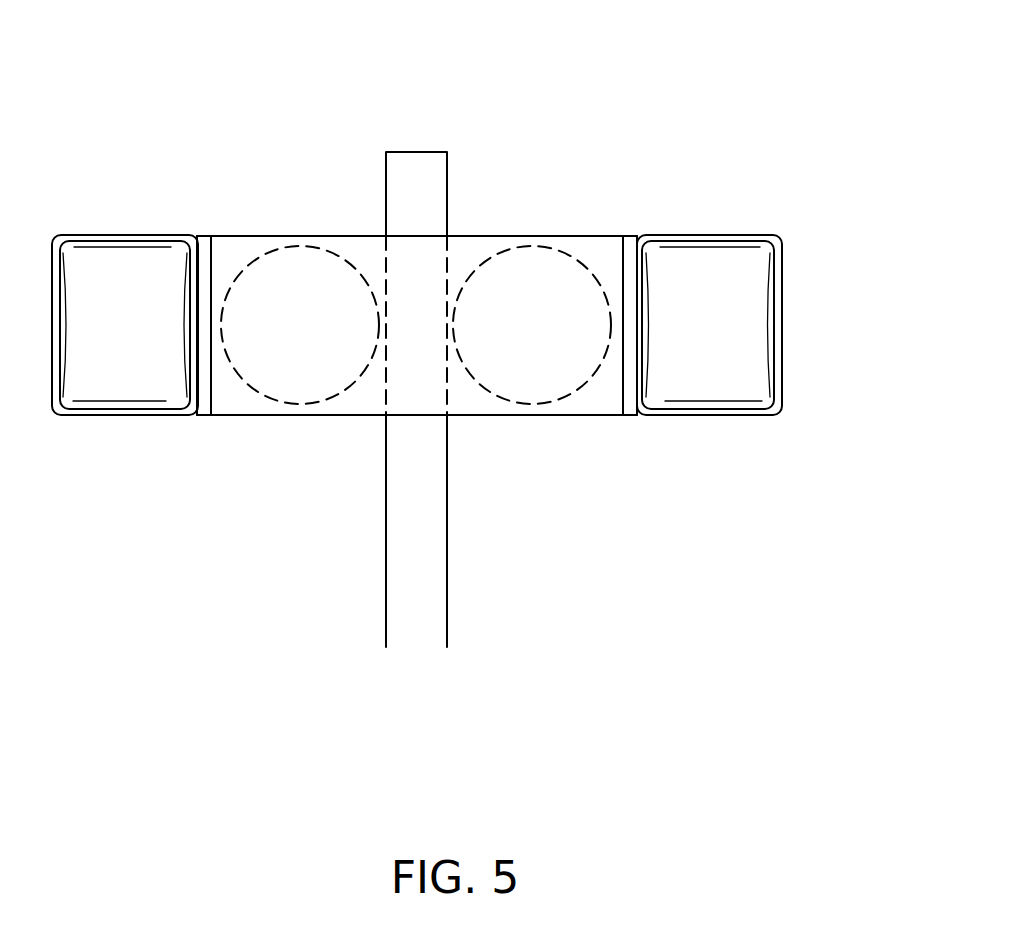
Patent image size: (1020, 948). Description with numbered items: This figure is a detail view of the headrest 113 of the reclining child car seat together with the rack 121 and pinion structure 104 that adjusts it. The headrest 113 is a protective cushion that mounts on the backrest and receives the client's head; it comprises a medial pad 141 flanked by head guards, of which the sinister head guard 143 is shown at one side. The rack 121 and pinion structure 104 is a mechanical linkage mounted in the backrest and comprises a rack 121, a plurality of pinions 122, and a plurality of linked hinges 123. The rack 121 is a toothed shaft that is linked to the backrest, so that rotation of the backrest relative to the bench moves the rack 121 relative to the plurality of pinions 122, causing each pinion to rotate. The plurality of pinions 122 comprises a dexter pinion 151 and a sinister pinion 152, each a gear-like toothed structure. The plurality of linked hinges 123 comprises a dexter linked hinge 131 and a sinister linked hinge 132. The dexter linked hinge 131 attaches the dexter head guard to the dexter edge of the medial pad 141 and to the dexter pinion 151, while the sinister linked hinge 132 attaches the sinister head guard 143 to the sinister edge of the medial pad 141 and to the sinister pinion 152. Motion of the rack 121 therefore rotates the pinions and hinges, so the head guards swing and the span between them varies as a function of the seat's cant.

The pinion structure 104 is at (551, 145).
The headrest 113 is at (782, 265).
The rack 121 is at (423, 540).
The plurality of pinions 122 is at (345, 277).
The plurality of linked hinges 123 is at (205, 415).
The dexter linked hinge 131 is at (203, 248).
The sinister linked hinge 132 is at (633, 242).
The medial pad 141 is at (330, 246).
The sinister head guard 143 is at (743, 344).
The dexter pinion 151 is at (306, 383).
The sinister pinion 152 is at (535, 383).